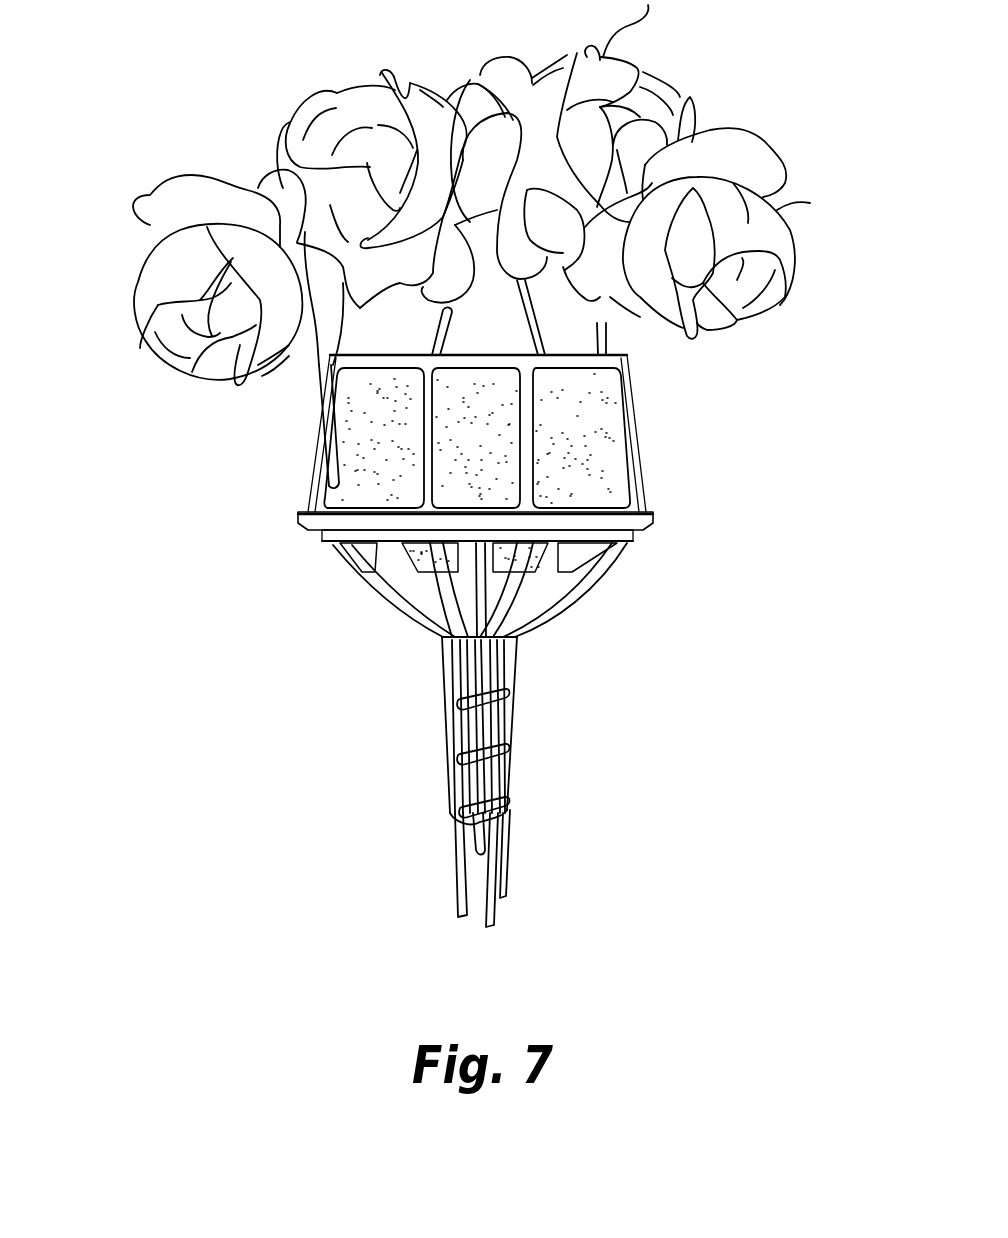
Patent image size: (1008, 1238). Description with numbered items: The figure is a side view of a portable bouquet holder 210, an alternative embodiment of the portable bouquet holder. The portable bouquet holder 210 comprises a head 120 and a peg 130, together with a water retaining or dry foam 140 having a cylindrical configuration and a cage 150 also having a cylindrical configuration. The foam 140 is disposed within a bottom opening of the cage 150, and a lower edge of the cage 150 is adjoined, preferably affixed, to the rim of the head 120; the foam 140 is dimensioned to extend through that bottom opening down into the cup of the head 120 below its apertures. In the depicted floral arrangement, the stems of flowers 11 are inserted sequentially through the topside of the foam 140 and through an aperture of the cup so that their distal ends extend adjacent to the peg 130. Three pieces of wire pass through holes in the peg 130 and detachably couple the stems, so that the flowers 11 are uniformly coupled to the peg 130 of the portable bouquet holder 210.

The flowers 11 is at (330, 100).
The head 120 is at (589, 590).
The peg 130 is at (438, 738).
The foam 140 is at (608, 432).
The cage 150 is at (630, 355).
The portable bouquet holder 210 is at (703, 421).